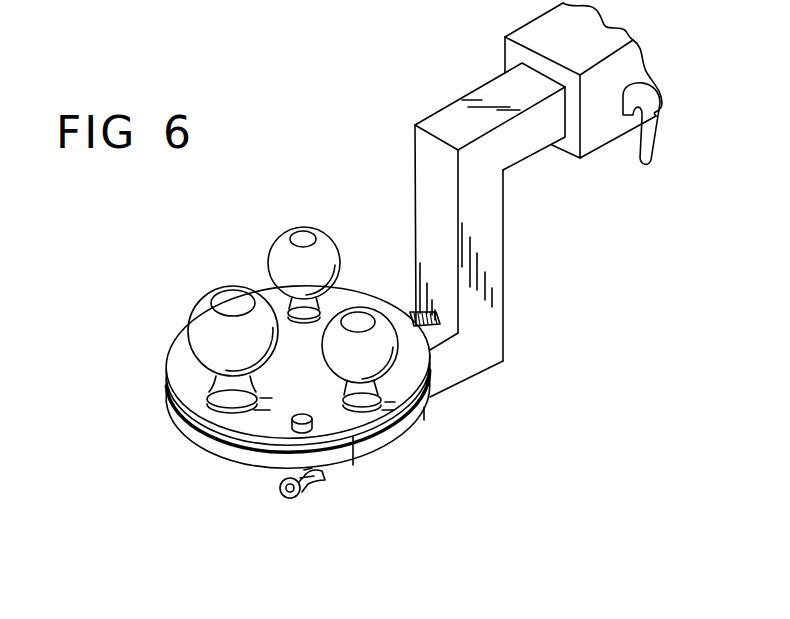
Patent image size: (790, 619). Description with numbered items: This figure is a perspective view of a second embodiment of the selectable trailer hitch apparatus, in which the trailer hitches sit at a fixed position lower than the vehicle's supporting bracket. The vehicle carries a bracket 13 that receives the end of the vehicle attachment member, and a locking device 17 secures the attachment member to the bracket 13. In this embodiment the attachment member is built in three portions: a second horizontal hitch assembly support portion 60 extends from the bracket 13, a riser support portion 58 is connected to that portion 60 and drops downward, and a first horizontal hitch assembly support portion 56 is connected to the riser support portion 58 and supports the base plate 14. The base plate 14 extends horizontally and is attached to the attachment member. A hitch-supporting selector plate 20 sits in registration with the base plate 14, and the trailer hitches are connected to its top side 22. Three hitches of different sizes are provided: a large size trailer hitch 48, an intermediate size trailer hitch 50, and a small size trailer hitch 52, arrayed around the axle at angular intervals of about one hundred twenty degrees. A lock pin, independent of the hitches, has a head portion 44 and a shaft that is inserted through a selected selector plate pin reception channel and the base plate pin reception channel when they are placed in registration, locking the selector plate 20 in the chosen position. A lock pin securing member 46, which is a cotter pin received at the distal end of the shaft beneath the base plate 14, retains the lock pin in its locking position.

The bracket 13 is at (595, 137).
The locking device 17 is at (652, 143).
The second horizontal hitch assembly support portion 60 is at (519, 148).
The riser support portion 58 is at (490, 257).
The first horizontal hitch assembly support portion 56 is at (448, 370).
The top side 22 is at (183, 350).
The hitch-supporting selector plate 20 is at (175, 409).
The base plate 14 is at (383, 445).
The head portion 44 is at (290, 423).
The lock pin securing member 46 is at (284, 497).
The large size trailer hitch 48 is at (202, 333).
The small size trailer hitch 52 is at (322, 248).
The intermediate size trailer hitch 50 is at (380, 358).